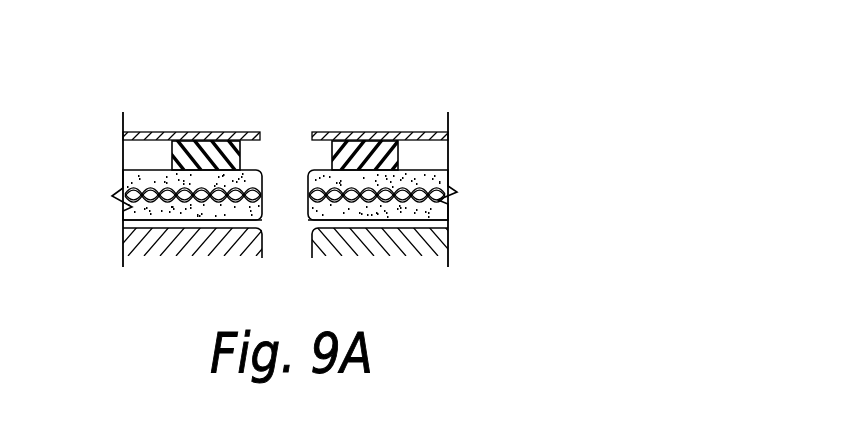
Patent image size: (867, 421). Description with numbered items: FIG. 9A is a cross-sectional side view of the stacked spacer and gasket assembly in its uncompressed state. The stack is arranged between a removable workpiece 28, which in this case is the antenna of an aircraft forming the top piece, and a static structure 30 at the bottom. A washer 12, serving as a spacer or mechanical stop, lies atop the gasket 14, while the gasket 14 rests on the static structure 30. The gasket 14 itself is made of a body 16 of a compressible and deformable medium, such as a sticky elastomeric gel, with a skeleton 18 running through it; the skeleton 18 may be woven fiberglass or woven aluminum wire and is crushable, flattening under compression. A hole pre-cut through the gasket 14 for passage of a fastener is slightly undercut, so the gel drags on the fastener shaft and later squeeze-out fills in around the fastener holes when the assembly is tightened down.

The removable workpiece 28 is at (363, 131).
The washer 12 is at (407, 152).
The gasket 14 is at (463, 177).
The body 16 is at (426, 212).
The skeleton 18 is at (455, 192).
The static structure 30 is at (463, 253).